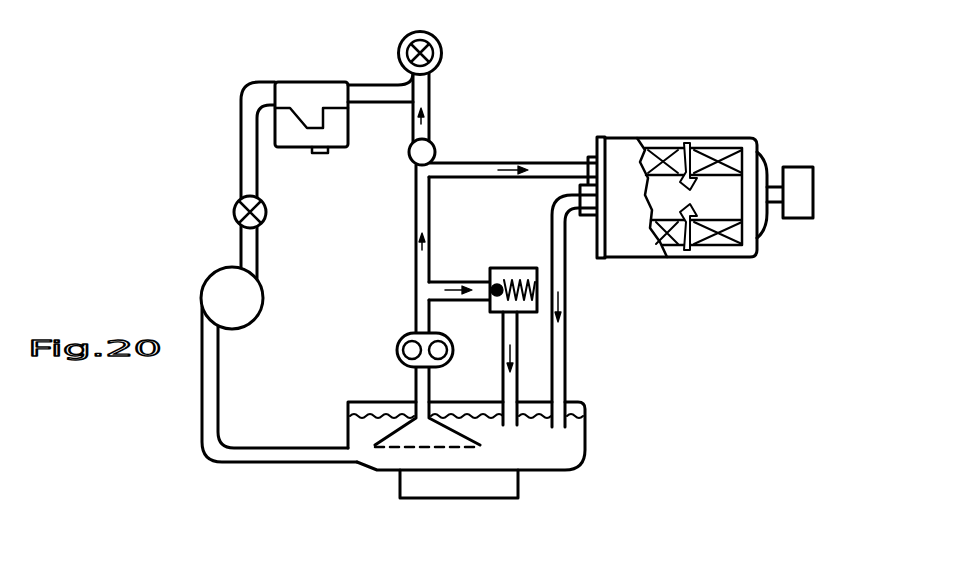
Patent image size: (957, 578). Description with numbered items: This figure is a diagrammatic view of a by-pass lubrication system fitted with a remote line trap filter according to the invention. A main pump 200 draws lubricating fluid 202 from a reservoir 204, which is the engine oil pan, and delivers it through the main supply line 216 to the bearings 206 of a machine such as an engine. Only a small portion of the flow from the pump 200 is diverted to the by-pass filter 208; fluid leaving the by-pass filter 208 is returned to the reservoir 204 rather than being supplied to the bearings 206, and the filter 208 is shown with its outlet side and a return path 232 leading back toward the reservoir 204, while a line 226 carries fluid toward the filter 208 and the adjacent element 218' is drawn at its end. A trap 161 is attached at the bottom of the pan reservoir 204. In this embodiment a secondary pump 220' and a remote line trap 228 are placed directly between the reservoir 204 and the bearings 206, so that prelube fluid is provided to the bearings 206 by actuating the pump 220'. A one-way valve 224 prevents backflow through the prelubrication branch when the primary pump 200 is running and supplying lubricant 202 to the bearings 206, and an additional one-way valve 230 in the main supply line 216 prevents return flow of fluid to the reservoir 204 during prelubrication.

The trap 161 is at (507, 480).
The main pump 200 is at (397, 345).
The lubricating fluid 202 is at (572, 425).
The reservoir 204 is at (588, 402).
The bearings 206 is at (438, 38).
The by-pass filter 208 is at (713, 137).
The main supply line 216 is at (415, 198).
The motor output shaft block 218' is at (801, 174).
The secondary pump 220' is at (279, 359).
The one-way valve 224 is at (237, 210).
The conduit to motor 226 is at (482, 163).
The remote line trap 228 is at (311, 82).
The one-way valve 230 is at (435, 145).
The return conduit 232 is at (568, 338).